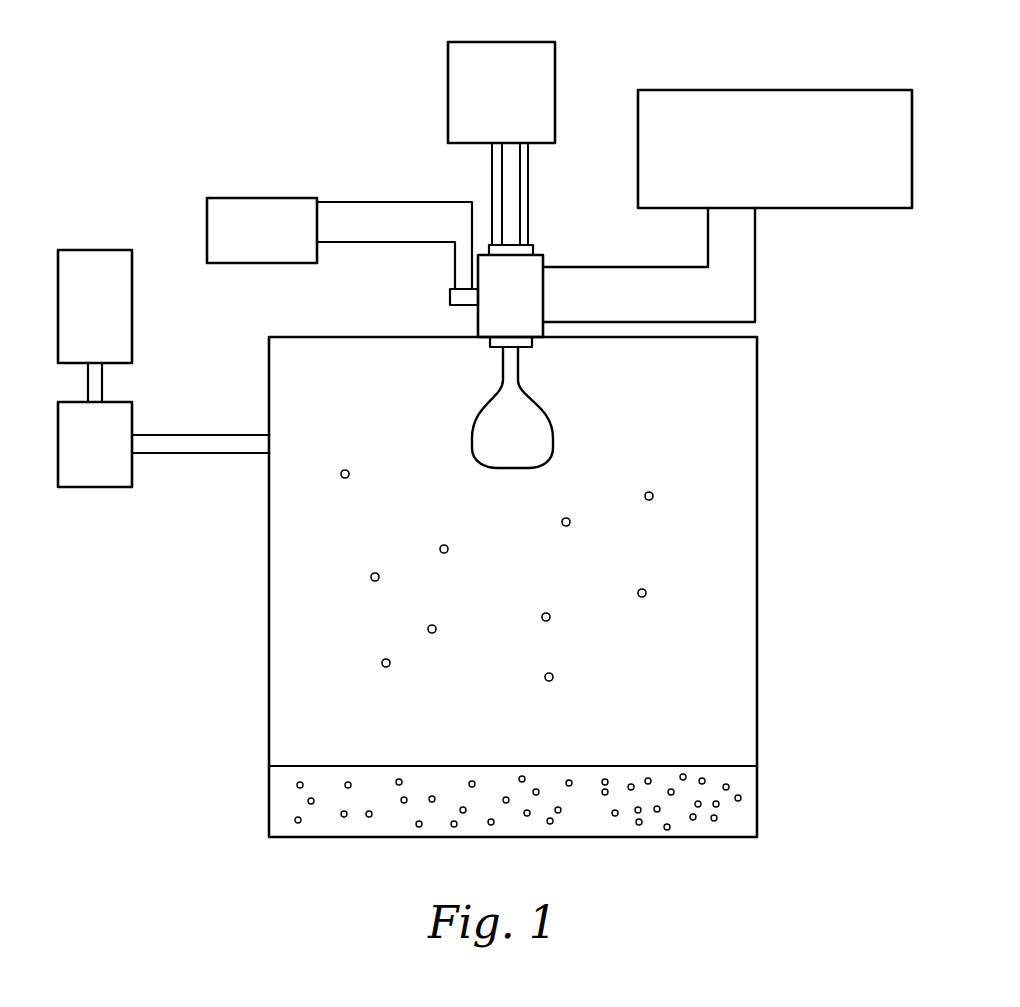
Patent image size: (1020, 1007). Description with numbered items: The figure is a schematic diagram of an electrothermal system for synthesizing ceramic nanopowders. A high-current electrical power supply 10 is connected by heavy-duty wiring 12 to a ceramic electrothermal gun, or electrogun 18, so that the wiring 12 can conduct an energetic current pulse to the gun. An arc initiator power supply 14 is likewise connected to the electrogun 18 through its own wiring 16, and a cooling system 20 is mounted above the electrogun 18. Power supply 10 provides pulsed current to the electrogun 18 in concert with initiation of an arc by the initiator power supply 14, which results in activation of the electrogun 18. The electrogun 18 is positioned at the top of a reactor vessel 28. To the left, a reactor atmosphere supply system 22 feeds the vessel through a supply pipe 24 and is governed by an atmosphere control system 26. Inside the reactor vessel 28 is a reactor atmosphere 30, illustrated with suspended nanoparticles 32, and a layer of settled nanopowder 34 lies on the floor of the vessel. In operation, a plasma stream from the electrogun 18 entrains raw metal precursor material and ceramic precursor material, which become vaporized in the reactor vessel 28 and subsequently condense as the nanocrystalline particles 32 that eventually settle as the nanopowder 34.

The high-current electrical power supply 10 is at (880, 90).
The heavy-duty wiring 12 is at (708, 250).
The arc initiator power supply 14 is at (291, 198).
The wiring 16 is at (420, 202).
The ceramic electrothermal gun 18 is at (478, 317).
The cooling system 20 is at (527, 42).
The reactor atmosphere supply system 22 is at (100, 250).
The supply pipe 24 is at (196, 435).
The atmosphere control system 26 is at (100, 487).
The reactor vessel 28 is at (757, 396).
The reactor atmosphere 30 is at (725, 669).
The suspended nanoparticles 32 is at (650, 598).
The layer of settled nanopowder 34 is at (300, 801).